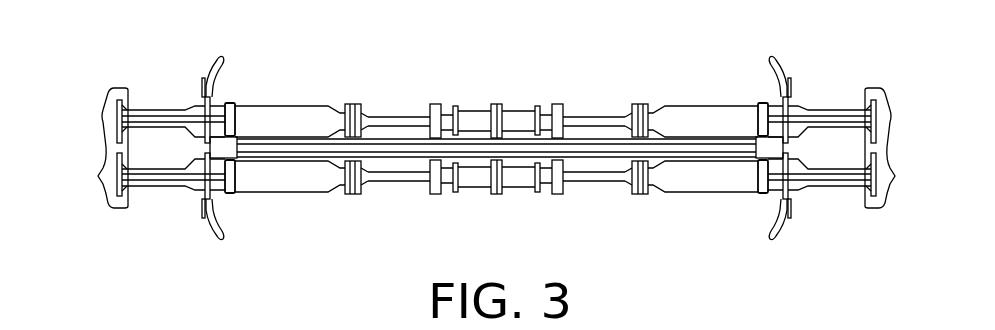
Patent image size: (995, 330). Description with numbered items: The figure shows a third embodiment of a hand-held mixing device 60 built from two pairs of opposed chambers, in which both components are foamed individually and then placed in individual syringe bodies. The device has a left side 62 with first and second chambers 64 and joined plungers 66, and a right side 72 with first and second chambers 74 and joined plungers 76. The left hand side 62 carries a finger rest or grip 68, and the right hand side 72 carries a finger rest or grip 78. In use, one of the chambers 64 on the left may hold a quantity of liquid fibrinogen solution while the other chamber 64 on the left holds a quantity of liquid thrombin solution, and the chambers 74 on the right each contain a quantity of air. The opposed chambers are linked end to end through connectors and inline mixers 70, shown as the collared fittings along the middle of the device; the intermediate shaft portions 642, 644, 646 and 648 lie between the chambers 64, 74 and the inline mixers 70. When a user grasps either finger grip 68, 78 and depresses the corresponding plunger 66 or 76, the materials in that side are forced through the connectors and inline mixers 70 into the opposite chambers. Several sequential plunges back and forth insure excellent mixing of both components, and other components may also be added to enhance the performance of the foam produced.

The mixing device 60 is at (602, 70).
The left side 62 is at (270, 45).
The first and second chambers 64 is at (281, 107).
The joined plungers 66 is at (98, 176).
The finger rest or grip 68 is at (203, 78).
The inline mixers 70 is at (494, 104).
The right side 72 is at (849, 50).
The first and second chambers 74 is at (698, 107).
The joined plungers 76 is at (895, 176).
The finger rest or grip 78 is at (791, 230).
The first upper shaft segment 642 is at (388, 113).
The first lower shaft segment 644 is at (389, 186).
The second upper shaft segment 646 is at (582, 113).
The second lower shaft segment 648 is at (588, 182).